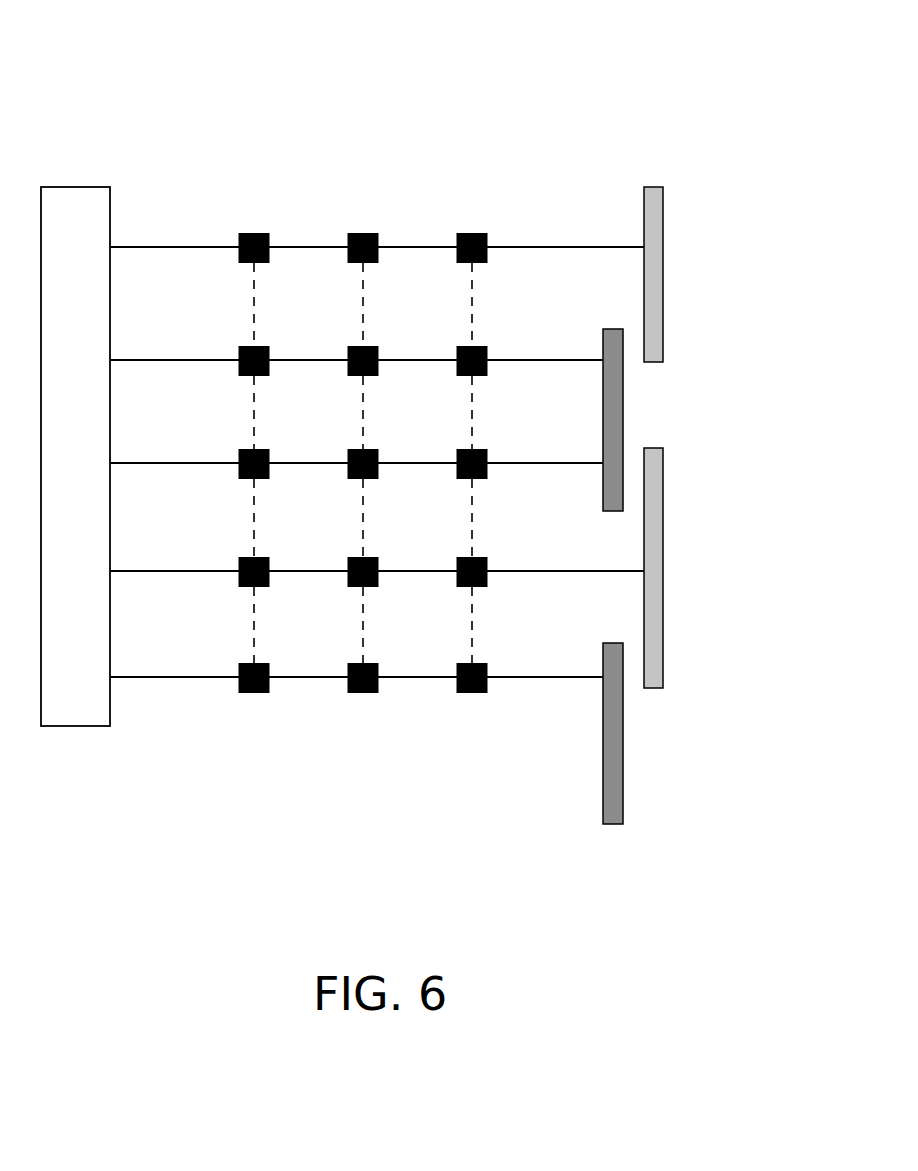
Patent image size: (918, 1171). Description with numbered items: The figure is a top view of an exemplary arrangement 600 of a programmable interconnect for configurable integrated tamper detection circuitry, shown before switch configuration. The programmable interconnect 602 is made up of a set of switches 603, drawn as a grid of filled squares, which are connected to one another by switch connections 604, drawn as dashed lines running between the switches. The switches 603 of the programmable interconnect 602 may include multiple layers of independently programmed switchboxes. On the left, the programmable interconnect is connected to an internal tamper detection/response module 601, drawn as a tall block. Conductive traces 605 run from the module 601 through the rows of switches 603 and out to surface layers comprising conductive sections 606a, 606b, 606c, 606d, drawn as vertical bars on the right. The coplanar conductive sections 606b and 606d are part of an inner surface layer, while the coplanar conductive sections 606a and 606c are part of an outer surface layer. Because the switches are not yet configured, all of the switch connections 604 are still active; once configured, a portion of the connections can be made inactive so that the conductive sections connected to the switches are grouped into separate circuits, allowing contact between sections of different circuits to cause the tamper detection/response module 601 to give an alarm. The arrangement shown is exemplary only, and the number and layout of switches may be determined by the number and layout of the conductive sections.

The memory device / crosspoint array system 600 is at (118, 56).
The internal tamper detection/response module 601 is at (92, 468).
The programmable interconnect 602 is at (488, 235).
The switches 603 is at (254, 693).
The switch connections 604 is at (396, 677).
The conductive traces 605 is at (516, 360).
The conductive section 606a is at (663, 263).
The conductive section 606b is at (623, 412).
The conductive section 606c is at (663, 580).
The conductive section 606d is at (623, 753).